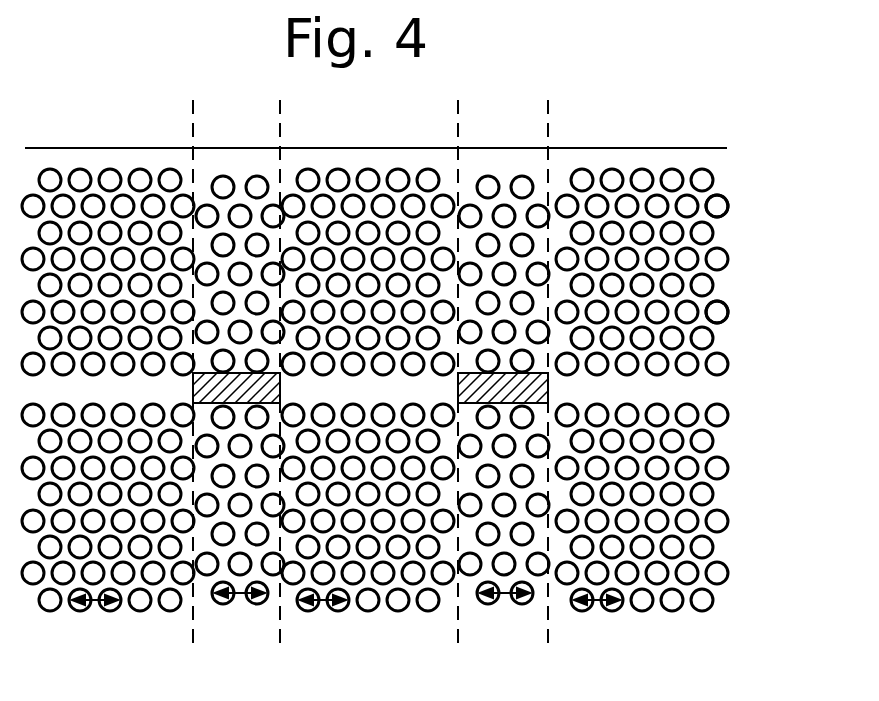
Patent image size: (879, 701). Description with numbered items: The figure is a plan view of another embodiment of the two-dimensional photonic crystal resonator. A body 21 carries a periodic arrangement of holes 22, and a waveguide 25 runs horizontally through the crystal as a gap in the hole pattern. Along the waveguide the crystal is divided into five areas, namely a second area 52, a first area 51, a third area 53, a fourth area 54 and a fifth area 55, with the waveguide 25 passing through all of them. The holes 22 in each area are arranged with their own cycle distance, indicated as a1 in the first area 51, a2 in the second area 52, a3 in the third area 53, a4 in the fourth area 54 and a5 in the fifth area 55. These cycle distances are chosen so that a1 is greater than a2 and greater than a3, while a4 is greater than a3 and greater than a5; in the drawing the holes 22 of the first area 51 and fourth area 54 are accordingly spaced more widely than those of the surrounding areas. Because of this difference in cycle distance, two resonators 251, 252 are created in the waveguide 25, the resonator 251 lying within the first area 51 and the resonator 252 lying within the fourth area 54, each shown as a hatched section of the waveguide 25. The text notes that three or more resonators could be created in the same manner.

The body 21 is at (700, 215).
The hole 22 is at (712, 316).
The waveguide 25 is at (696, 388).
The first area 51 is at (238, 358).
The second area 52 is at (108, 362).
The third area 53 is at (369, 362).
The fourth area 54 is at (503, 358).
The fifth area 55 is at (638, 362).
The resonator 251 is at (215, 385).
The resonator 252 is at (510, 385).
The cycle distance a1 is at (247, 600).
The cycle distance a2 is at (100, 605).
The cycle distance a3 is at (333, 605).
The cycle distance a4 is at (508, 598).
The cycle distance a5 is at (602, 605).